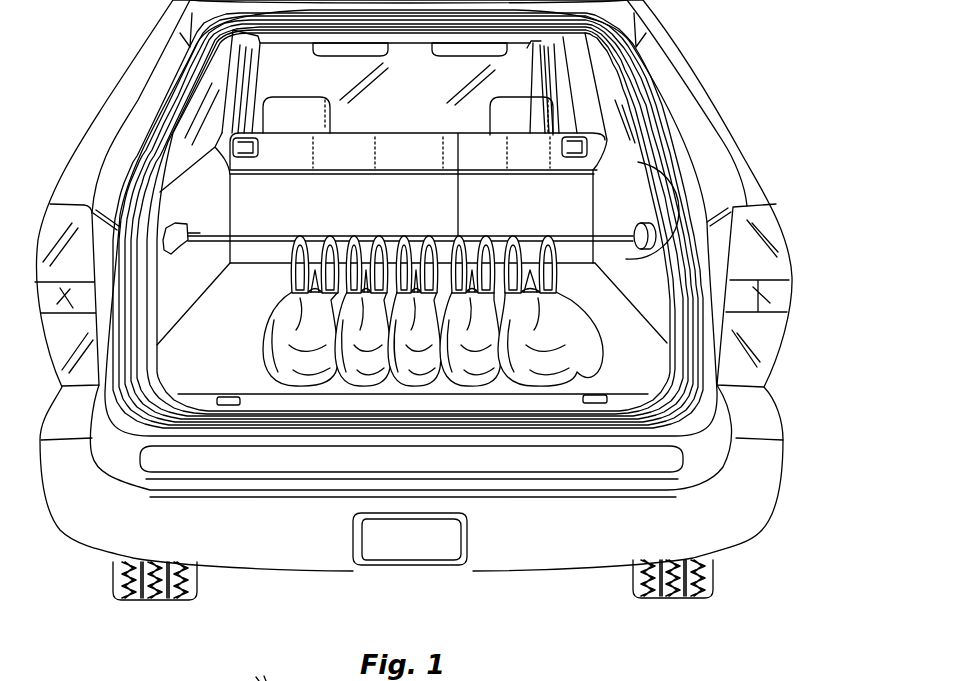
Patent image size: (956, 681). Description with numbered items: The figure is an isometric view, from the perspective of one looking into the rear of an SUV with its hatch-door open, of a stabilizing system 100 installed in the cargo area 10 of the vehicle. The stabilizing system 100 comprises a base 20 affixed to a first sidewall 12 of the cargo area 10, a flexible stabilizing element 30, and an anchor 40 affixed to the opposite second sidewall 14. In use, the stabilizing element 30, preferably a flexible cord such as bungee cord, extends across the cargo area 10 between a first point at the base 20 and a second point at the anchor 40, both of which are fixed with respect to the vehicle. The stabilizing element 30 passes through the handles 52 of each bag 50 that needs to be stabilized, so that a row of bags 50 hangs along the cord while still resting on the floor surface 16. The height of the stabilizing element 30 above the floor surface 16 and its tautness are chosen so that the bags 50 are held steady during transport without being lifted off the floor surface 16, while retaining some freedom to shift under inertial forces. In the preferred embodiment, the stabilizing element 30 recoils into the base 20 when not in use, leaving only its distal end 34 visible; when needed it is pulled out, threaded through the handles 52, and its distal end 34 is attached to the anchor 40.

The cargo area 10 is at (532, 142).
The first sidewall 12 is at (632, 173).
The second sidewall 14 is at (200, 147).
The floor surface 16 is at (234, 347).
The base 20 is at (652, 223).
The stabilizing element 30 is at (722, 221).
The distal end 34 is at (200, 227).
The anchor 40 is at (170, 216).
The bag 50 is at (331, 348).
The handles 52 is at (358, 240).
The stabilizing system 100 is at (415, 186).